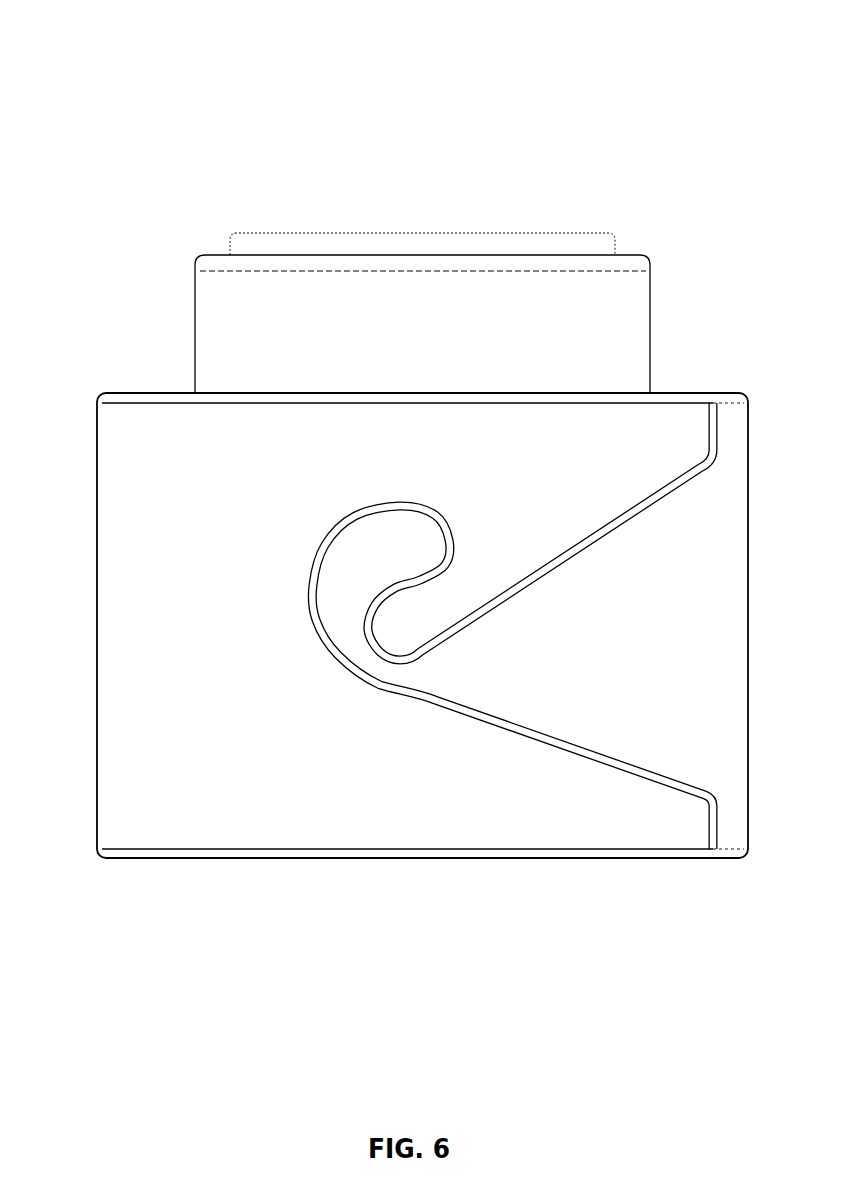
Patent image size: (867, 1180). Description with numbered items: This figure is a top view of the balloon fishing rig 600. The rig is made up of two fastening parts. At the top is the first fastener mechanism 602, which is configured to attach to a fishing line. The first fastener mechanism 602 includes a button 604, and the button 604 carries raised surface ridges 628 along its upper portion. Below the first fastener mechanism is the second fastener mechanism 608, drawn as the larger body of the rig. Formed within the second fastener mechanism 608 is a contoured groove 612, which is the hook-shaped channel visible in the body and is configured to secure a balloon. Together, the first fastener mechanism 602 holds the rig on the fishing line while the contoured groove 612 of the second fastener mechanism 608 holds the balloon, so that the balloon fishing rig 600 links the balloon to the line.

The balloon fishing rig 600 is at (712, 54).
The first fastener mechanism 602 is at (130, 346).
The button 604 is at (442, 320).
The raised surface ridges 628 is at (392, 240).
The second fastener mechanism 608 is at (370, 925).
The contoured groove 612 is at (358, 575).